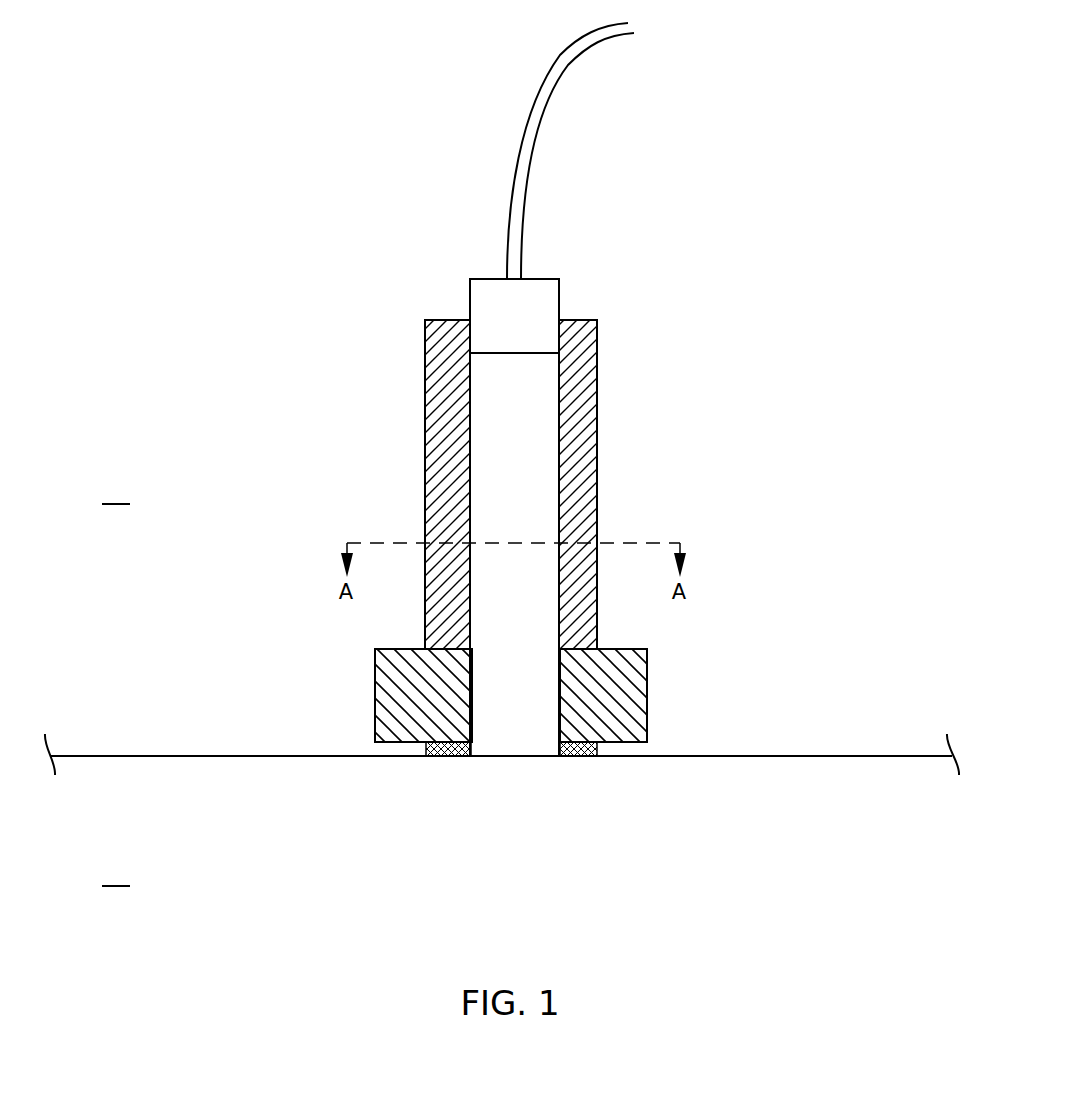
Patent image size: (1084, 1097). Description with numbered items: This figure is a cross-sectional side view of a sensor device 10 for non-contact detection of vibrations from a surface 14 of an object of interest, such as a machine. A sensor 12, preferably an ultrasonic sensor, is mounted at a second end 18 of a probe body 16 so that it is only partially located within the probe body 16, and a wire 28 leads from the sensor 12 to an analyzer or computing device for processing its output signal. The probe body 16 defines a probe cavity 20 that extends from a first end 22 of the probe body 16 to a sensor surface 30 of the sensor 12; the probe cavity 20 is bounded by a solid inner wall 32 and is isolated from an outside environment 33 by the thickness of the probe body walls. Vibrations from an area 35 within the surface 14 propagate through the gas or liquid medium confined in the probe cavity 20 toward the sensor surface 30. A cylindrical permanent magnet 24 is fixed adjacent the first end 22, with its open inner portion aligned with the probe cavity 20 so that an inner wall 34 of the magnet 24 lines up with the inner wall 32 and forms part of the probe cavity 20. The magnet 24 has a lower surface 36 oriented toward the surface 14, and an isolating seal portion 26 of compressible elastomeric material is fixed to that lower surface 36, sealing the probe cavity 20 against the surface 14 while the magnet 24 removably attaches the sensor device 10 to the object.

The sensor device 10 is at (356, 206).
The sensor 12 is at (559, 295).
The surface 14 is at (284, 756).
The probe body 16 is at (597, 500).
The second end 18 is at (411, 365).
The probe cavity 20 is at (507, 478).
The first end 22 is at (352, 651).
The magnet 24 is at (647, 683).
The isolating seal portion 26 is at (597, 748).
The wire 28 is at (545, 125).
The sensor surface 30 is at (506, 354).
The inner wall 32 is at (559, 432).
The outside environment 33 is at (115, 490).
The inner wall of the magnet 34 is at (473, 679).
The area 35 is at (115, 872).
The lower surface 36 is at (401, 742).